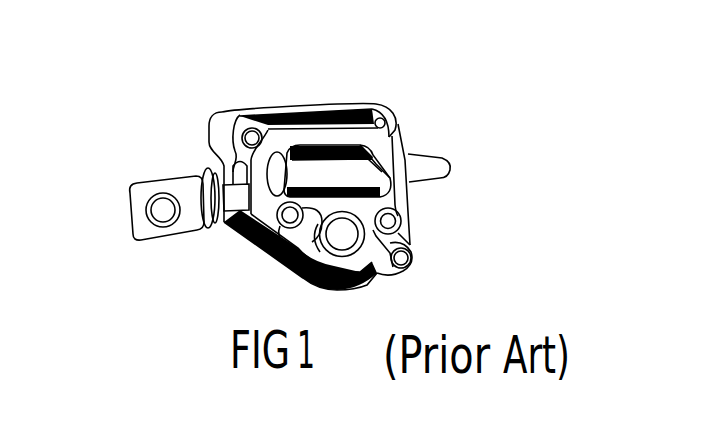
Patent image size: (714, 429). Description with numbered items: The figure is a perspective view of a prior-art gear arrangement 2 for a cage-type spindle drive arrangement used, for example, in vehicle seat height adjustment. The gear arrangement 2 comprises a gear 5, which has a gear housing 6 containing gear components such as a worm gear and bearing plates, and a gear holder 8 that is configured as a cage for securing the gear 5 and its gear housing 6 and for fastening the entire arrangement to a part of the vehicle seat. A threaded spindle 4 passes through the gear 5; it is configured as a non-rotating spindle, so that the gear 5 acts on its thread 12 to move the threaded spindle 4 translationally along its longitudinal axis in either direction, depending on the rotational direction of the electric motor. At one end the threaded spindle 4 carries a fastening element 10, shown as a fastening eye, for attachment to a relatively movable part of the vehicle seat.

The gear arrangement 2 is at (335, 99).
The gear holder 8 is at (260, 107).
The threaded spindle 4 is at (450, 167).
The thread 12 is at (450, 167).
The gear 5 is at (292, 248).
The gear housing 6 is at (292, 248).
The fastening element 10 is at (125, 216).